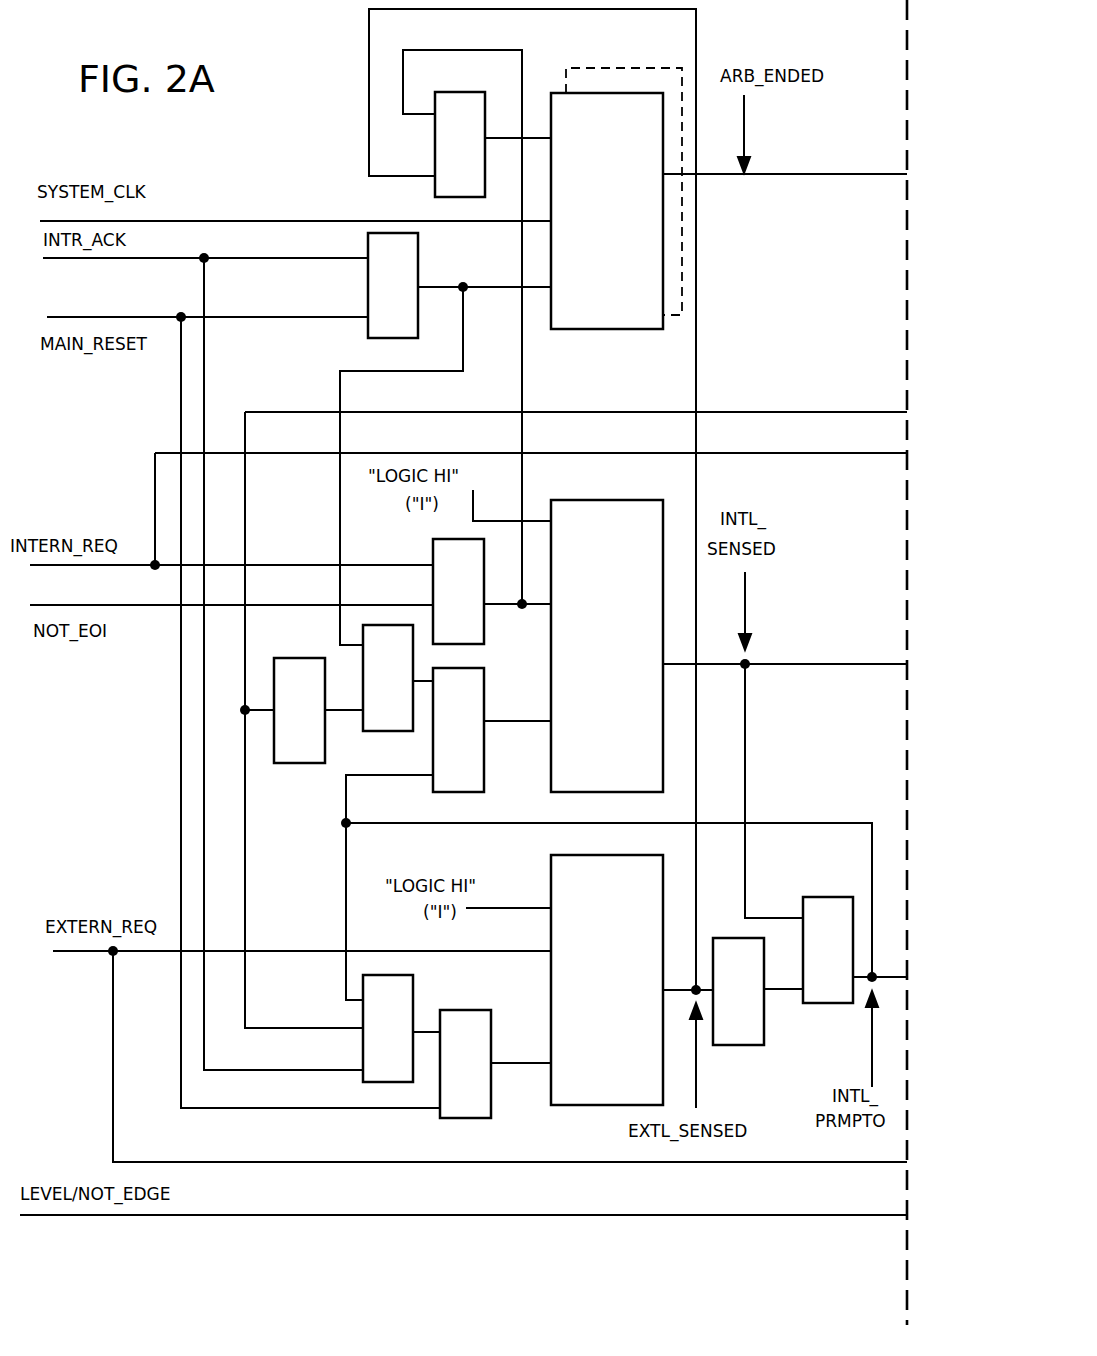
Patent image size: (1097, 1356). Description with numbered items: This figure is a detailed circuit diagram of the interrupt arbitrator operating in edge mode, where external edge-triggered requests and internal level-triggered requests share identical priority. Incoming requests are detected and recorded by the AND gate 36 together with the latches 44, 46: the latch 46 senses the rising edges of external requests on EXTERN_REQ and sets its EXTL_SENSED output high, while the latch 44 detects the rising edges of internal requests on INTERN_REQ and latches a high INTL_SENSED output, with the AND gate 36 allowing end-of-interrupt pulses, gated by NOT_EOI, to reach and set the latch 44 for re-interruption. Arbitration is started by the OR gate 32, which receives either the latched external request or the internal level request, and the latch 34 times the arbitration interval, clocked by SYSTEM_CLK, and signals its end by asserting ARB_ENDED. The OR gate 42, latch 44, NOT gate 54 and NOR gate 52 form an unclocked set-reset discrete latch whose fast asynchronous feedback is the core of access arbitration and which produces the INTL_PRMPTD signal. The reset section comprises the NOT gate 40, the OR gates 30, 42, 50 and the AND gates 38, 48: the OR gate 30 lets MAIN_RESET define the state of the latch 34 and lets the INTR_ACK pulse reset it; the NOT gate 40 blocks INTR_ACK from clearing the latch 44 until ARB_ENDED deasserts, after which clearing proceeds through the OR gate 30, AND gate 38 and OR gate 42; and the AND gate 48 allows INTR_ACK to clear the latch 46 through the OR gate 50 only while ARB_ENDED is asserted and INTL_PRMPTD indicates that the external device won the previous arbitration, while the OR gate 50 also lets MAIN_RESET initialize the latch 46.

The OR gate 30 is at (418, 258).
The OR gate 32 is at (453, 90).
The latch 34 is at (600, 330).
The AND gate 36 is at (433, 548).
The AND gate 38 is at (383, 732).
The NOT gate 40 is at (294, 657).
The OR gate 42 is at (484, 698).
The latch 44 is at (627, 497).
The latch 46 is at (548, 872).
The AND gate 48 is at (413, 993).
The OR gate 50 is at (465, 1010).
The NOR gate 52 is at (810, 895).
The NOT gate 54 is at (725, 1045).